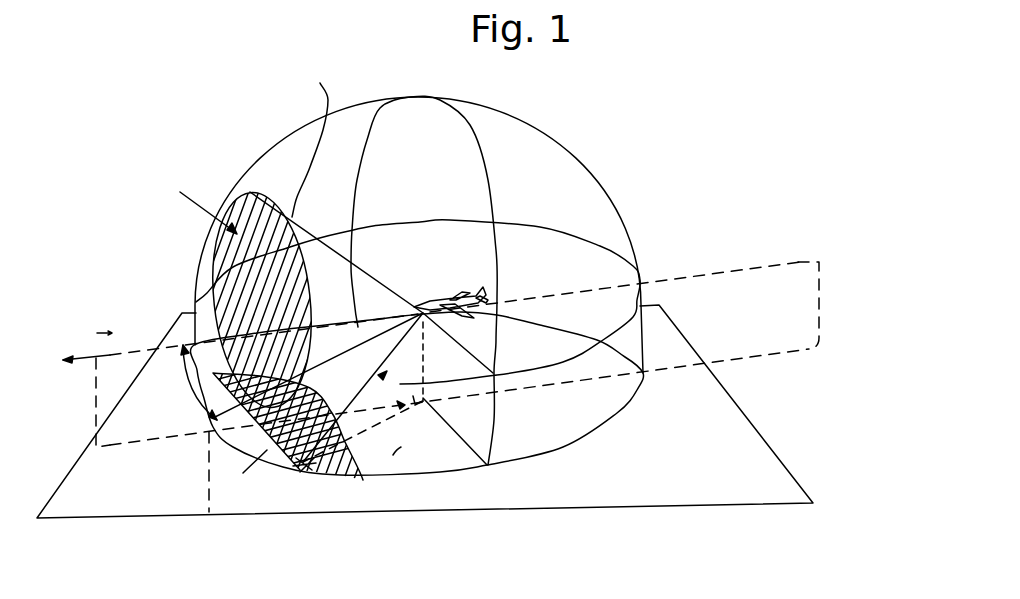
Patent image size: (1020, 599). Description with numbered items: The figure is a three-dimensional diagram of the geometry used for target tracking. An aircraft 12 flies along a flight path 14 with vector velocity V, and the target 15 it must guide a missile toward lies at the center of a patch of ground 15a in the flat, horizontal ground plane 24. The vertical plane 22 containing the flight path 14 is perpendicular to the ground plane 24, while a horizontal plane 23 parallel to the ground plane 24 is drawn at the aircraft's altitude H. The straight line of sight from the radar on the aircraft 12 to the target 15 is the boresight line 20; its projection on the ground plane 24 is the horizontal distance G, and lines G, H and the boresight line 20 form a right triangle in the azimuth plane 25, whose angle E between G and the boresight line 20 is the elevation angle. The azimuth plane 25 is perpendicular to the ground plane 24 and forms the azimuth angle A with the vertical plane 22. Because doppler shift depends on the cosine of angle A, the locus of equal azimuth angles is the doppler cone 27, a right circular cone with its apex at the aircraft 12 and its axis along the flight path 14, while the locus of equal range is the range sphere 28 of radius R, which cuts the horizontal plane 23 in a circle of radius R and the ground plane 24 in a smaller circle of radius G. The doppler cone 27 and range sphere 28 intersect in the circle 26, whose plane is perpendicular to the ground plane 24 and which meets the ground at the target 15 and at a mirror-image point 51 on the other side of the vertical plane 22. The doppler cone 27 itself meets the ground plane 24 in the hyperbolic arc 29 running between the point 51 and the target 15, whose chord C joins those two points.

The aircraft 12 is at (430, 301).
The flight path 14 is at (567, 293).
The target 15 is at (308, 473).
The patch or area of ground 15a is at (293, 480).
The boresight line 20 is at (350, 400).
The vertical plane 22 is at (771, 282).
The horizontal plane 23 is at (540, 228).
The ground plane 24 is at (793, 484).
The azimuth plane 25 is at (213, 477).
The circle 26 is at (303, 297).
The doppler cone 27 is at (318, 256).
The range sphere 28 is at (557, 141).
The hyperbolic arc 29 is at (363, 480).
The point 51 is at (200, 370).